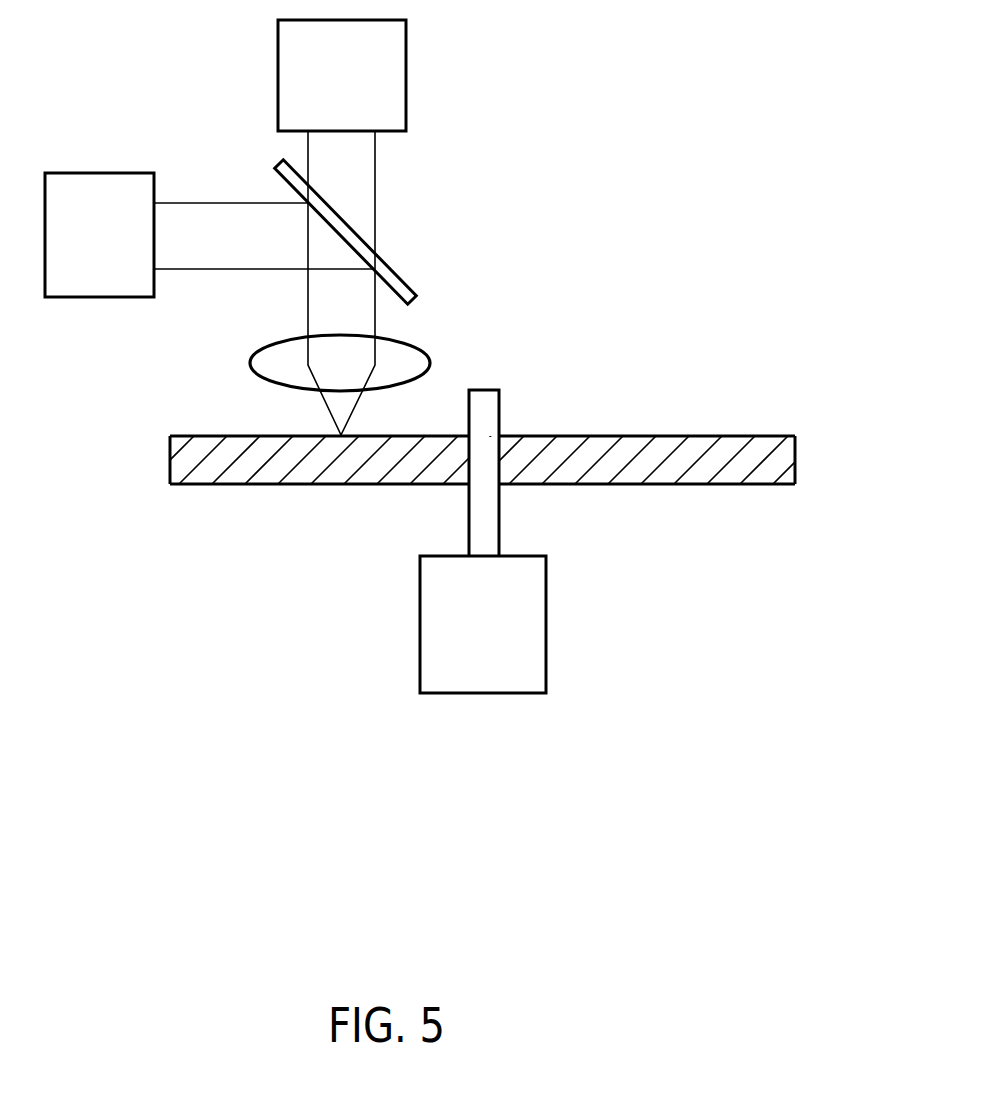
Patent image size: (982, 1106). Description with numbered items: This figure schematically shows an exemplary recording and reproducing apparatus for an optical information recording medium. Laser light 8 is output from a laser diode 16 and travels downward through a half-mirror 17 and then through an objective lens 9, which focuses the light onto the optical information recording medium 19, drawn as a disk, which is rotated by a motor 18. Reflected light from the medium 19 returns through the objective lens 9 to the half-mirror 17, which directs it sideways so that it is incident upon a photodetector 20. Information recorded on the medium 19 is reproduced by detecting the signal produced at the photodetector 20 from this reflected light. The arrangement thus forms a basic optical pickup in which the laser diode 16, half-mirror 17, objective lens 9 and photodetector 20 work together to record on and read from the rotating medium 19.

The laser diode 16 is at (406, 73).
The laser light 8 is at (377, 177).
The half-mirror 17 is at (400, 273).
The photodetector 20 is at (104, 301).
The objective lens 9 is at (427, 350).
The optical information recording medium 19 is at (795, 460).
The motor 18 is at (546, 622).